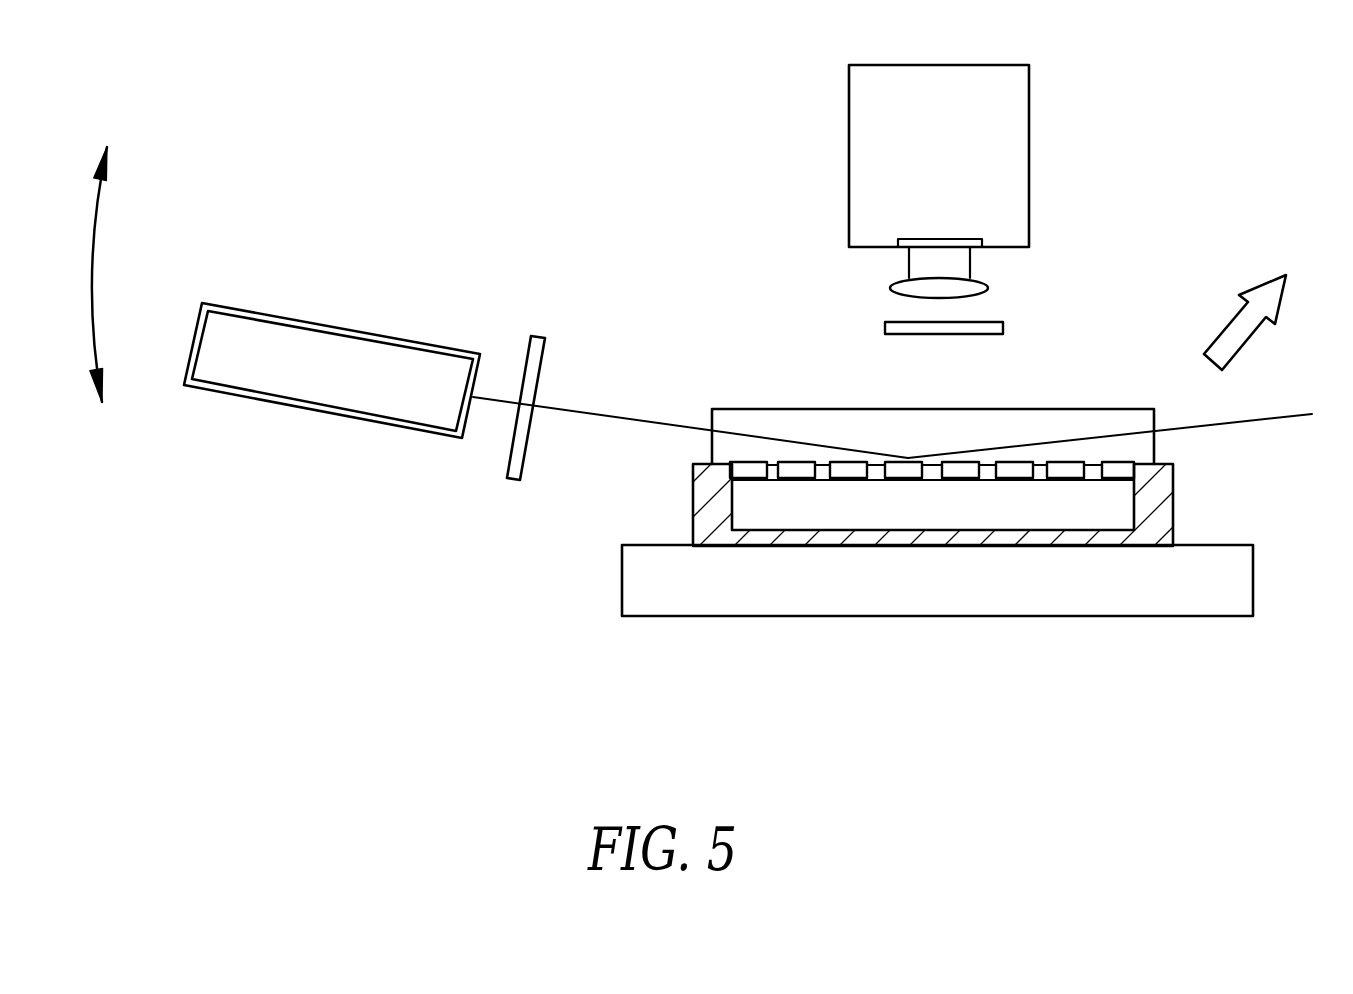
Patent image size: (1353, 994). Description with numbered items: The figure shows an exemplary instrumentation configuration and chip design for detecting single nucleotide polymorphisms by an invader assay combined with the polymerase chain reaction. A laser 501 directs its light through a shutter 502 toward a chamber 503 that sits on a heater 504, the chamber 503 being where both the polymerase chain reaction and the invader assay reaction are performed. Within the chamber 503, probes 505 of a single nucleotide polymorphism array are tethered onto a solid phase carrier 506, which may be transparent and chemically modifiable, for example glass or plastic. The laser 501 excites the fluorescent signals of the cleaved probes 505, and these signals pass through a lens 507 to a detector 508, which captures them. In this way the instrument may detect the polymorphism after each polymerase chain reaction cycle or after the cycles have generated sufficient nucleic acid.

The laser 501 is at (342, 330).
The shutter 502 is at (540, 333).
The chamber 503 is at (693, 510).
The heater 504 is at (735, 618).
The probes 505 is at (1173, 464).
The solid phase carrier 506 is at (1120, 407).
The lens 507 is at (883, 325).
The detector 508 is at (985, 63).